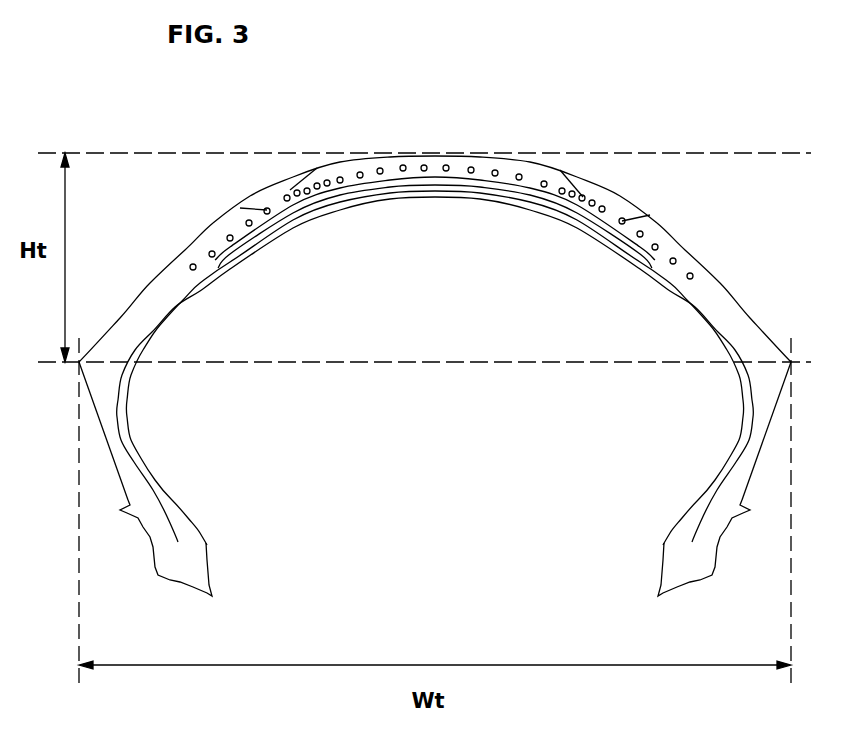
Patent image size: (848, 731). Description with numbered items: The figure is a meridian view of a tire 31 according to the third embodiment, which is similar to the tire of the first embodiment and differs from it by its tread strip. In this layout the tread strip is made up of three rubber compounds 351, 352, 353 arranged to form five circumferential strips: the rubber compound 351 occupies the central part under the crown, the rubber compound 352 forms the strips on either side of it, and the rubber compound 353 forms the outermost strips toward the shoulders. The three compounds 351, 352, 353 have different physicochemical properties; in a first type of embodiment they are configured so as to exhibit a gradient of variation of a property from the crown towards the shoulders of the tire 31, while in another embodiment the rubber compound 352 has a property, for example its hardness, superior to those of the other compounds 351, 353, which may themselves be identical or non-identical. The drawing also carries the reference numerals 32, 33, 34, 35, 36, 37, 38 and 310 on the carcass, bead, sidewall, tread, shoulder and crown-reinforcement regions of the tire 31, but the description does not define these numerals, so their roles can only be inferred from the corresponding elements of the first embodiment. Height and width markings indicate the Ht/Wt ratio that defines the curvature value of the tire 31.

The tire 31 is at (541, 121).
The carcass 32 is at (714, 500).
The bead portion 33 is at (192, 562).
The sidewall portion 34 is at (103, 418).
The tread portion 35 is at (303, 145).
The shoulder portion 36 is at (706, 298).
The belt layer 37 is at (222, 257).
The belt reinforcing layer 38 is at (587, 219).
The pins 310 is at (380, 176).
The rubber compound 351 is at (424, 162).
The rubber compound 352 is at (273, 197).
The rubber compound 353 is at (170, 270).